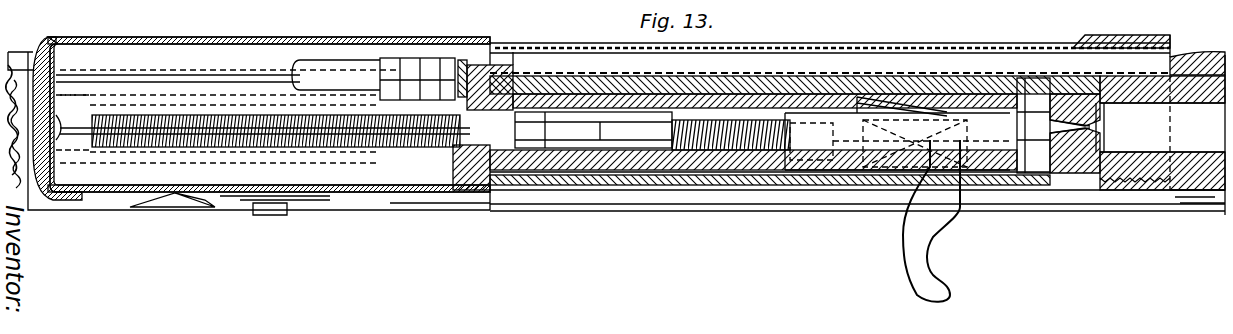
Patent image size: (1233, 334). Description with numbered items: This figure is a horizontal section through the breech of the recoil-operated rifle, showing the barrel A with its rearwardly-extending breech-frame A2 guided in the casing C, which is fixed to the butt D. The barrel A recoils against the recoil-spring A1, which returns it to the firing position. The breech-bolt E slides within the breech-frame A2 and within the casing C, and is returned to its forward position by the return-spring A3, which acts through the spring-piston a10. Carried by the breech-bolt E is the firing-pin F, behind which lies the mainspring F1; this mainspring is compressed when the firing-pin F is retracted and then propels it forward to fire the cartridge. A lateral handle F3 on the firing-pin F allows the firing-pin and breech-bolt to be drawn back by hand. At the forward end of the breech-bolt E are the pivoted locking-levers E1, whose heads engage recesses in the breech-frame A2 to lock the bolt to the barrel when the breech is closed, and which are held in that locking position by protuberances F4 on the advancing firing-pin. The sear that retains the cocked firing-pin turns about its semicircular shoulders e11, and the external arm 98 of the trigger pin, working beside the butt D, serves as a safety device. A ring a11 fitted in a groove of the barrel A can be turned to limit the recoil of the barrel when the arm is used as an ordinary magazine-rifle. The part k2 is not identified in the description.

The casing C is at (626, 115).
The butt D is at (50, 118).
The bolt handle head k2 is at (424, 96).
The semicircular shoulders e11 is at (470, 64).
The recoil-spring A1 is at (217, 147).
The external arm 98 is at (263, 200).
The return-spring A3 is at (607, 44).
The breech-frame A2 is at (828, 43).
The breech-bolt E is at (840, 100).
The firing-pin F is at (548, 133).
The mainspring F1 is at (753, 120).
The locking-levers E1 is at (913, 107).
The protuberances F4 is at (1037, 143).
The barrel A is at (1160, 135).
The spring-piston a10 is at (1127, 60).
The ring a11 is at (1197, 63).
The lateral handle F3 is at (910, 247).